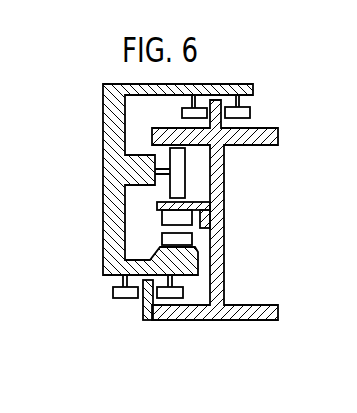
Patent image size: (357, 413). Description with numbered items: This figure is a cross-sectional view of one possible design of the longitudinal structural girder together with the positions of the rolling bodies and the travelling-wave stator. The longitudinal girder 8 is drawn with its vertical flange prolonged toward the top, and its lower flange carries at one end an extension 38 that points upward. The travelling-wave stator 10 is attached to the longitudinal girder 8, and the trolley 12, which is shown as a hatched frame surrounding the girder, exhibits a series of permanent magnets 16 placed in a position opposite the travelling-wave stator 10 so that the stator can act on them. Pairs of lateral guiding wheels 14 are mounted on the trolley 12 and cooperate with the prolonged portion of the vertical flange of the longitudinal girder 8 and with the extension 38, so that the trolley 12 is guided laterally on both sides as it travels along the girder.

The trolley 12 is at (103, 142).
The longitudinal girder 8 is at (219, 183).
The lateral guiding wheels 14 is at (206, 173).
The travelling-wave stator 10 is at (173, 218).
The permanent magnets 16 is at (175, 240).
The extension 38 is at (143, 300).